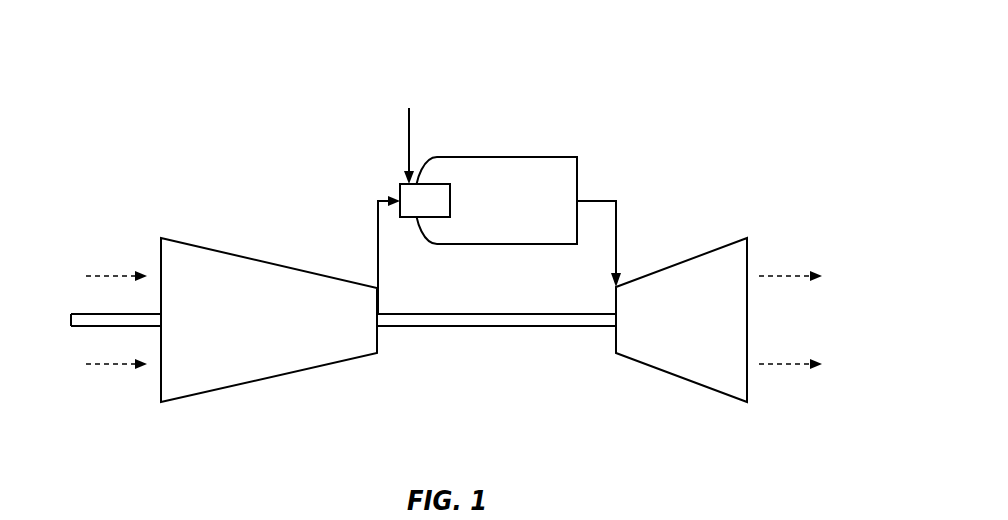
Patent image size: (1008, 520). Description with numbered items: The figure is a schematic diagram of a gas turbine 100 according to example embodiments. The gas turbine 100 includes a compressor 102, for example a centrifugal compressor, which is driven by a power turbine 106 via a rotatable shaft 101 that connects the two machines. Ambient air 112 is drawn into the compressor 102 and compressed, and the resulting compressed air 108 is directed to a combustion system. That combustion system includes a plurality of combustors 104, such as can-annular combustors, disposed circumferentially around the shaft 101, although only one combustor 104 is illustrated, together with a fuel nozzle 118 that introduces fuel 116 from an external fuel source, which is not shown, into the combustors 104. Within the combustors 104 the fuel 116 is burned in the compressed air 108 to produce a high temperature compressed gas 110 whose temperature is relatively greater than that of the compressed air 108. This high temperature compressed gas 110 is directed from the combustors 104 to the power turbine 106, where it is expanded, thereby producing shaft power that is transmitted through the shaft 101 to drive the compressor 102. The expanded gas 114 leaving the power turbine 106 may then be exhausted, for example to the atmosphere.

The gas turbine 100 is at (727, 40).
The rotatable shaft 101 is at (497, 327).
The compressor 102 is at (267, 262).
The combustor 104 is at (505, 157).
The power turbine 106 is at (682, 380).
The compressed air 108 is at (378, 253).
The high temperature compressed gas 110 is at (616, 232).
The ambient air 112 is at (113, 275).
The expanded gas 114 is at (785, 275).
The fuel 116 is at (409, 143).
The fuel nozzle 118 is at (400, 195).